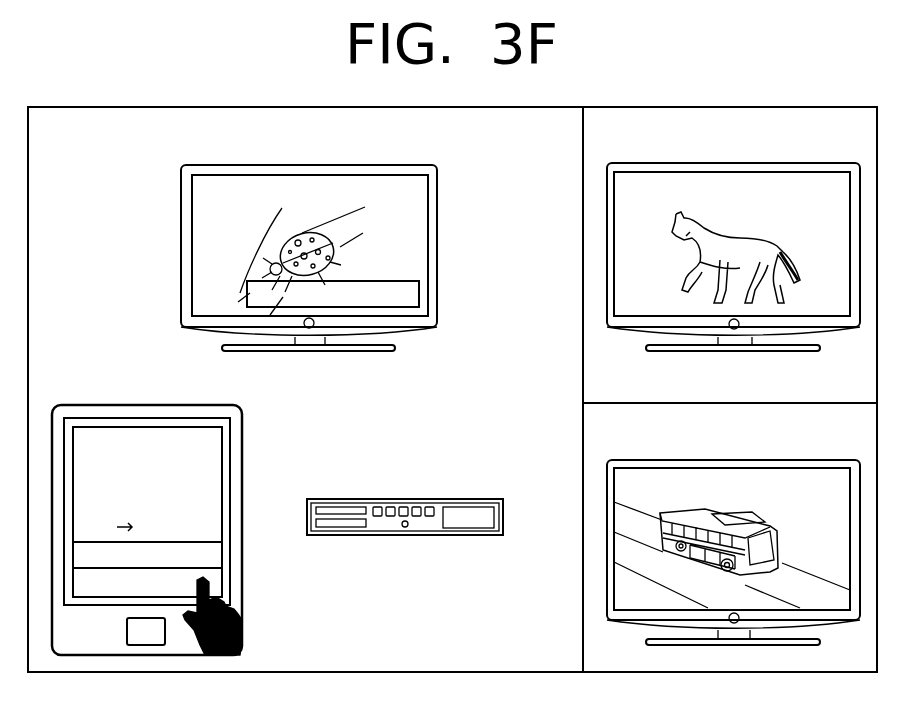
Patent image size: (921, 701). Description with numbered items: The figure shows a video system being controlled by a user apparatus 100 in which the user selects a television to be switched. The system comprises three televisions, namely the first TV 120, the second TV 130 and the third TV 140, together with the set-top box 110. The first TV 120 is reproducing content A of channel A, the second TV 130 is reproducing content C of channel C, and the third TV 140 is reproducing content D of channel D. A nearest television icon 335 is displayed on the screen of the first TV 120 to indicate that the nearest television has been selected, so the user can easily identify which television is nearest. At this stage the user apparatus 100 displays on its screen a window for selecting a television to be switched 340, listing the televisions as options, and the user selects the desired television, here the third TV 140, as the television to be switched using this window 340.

The user apparatus 100 is at (95, 405).
The set-top box 110 is at (409, 498).
The first TV 120 is at (295, 164).
The second TV 130 is at (720, 163).
The third TV 140 is at (720, 460).
The nearest television icon 335 is at (417, 280).
The window for selecting a television to be switched 340 is at (196, 425).